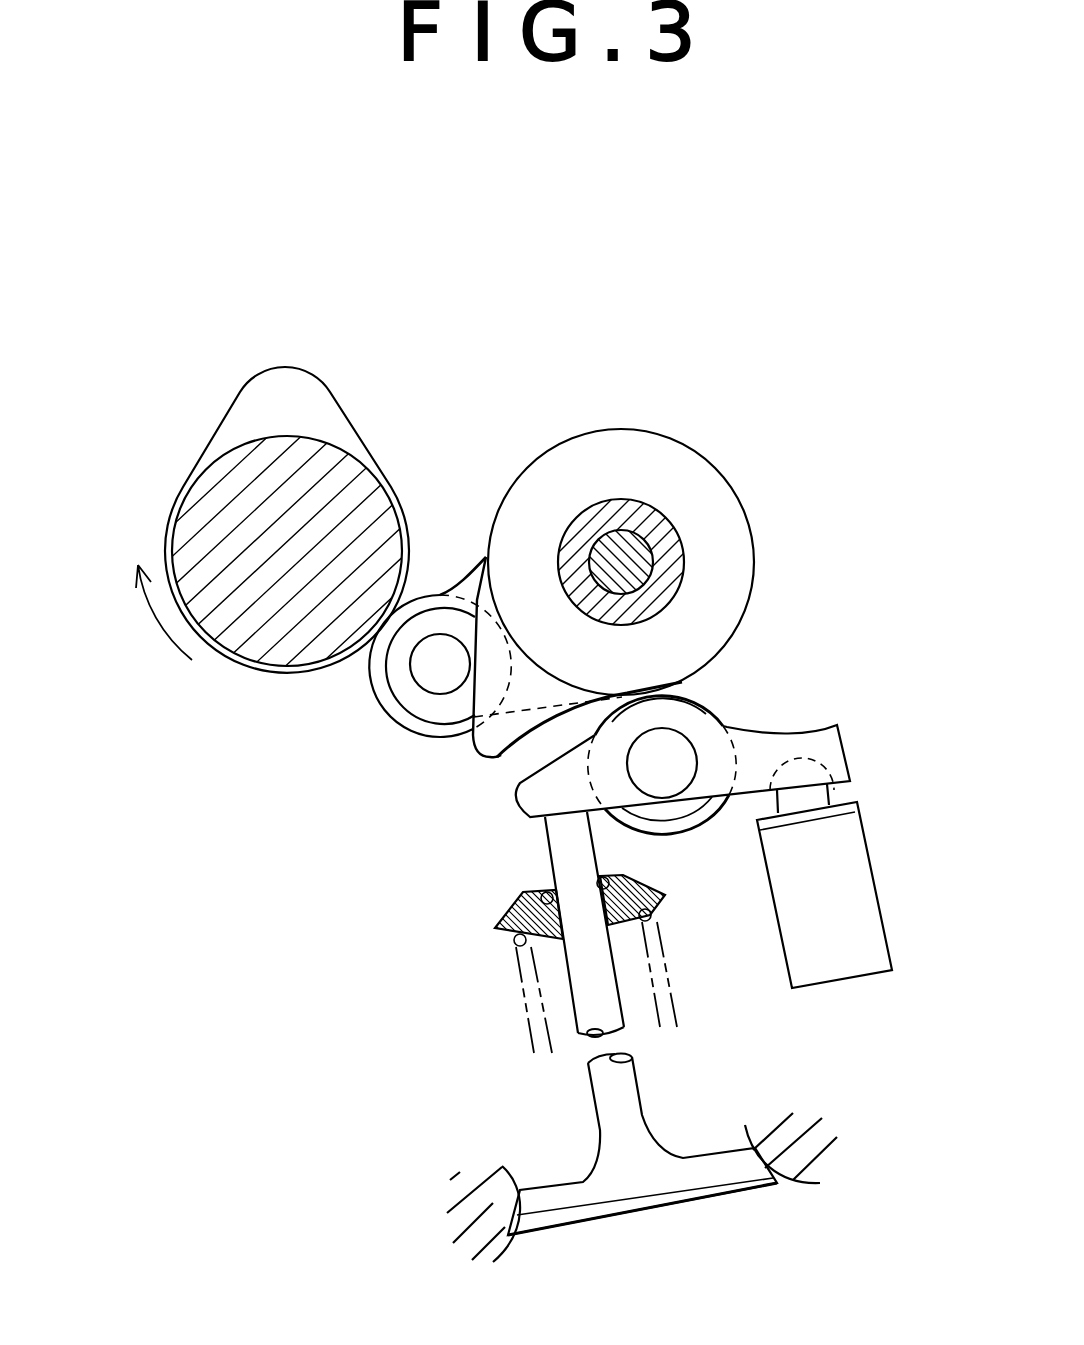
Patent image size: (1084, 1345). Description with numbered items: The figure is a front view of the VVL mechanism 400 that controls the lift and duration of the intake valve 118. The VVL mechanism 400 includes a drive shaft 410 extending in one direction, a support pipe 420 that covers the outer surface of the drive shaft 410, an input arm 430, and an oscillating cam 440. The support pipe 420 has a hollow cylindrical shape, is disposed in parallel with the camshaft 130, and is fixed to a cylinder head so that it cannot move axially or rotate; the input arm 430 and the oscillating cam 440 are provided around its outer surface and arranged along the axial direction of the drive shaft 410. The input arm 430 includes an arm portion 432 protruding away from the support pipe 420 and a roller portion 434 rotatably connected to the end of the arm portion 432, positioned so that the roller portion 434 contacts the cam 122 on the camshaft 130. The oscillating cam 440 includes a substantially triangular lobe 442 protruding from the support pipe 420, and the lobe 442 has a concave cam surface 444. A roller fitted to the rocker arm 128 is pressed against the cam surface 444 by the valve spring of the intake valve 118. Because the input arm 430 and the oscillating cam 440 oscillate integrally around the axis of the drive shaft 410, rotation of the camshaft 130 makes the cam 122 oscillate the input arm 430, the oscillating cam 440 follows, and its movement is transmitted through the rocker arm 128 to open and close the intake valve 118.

The intake valve 118 is at (543, 856).
The cam 122 is at (260, 404).
The rocker arm 128 is at (815, 727).
The camshaft 130 is at (222, 490).
The VVL mechanism 400 is at (716, 400).
The drive shaft 410 is at (625, 530).
The support pipe 420 is at (685, 553).
The input arm 430 is at (466, 572).
The arm portion 432 is at (443, 618).
The roller portion 434 is at (380, 711).
The oscillating cam 440 is at (705, 494).
The lobe 442 is at (488, 740).
The cam surface 444 is at (523, 740).